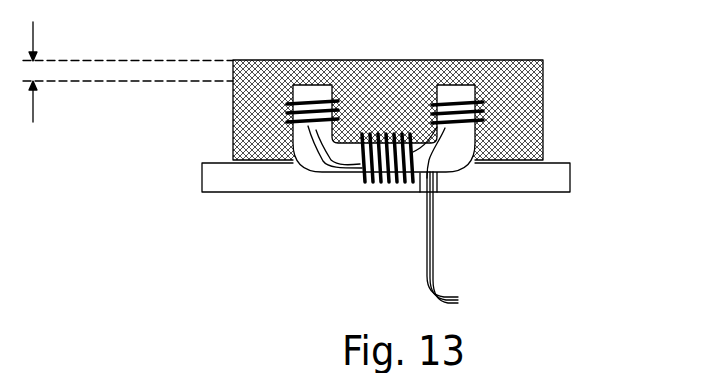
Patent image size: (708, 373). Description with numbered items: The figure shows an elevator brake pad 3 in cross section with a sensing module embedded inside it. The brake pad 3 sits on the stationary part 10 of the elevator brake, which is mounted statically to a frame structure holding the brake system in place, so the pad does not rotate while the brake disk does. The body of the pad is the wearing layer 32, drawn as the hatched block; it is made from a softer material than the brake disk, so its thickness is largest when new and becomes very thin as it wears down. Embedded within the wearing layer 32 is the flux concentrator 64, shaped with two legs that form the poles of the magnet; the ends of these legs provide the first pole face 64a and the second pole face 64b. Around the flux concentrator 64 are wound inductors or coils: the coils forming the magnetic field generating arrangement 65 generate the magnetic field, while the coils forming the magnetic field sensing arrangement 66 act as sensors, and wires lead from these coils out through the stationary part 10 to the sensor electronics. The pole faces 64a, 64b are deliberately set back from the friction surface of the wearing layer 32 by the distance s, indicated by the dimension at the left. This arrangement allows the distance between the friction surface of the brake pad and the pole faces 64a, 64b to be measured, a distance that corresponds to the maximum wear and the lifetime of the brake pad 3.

The elevator brake pad 3 is at (601, 183).
The stationary part 10 is at (245, 180).
The wearing layer 32 is at (530, 107).
The flux concentrator 64 is at (330, 168).
The first pole face 64a is at (288, 101).
The second pole face 64b is at (478, 96).
The magnetic field generating arrangement 65 is at (389, 183).
The magnetic field sensing arrangement 66 is at (300, 162).
The distance s is at (128, 71).